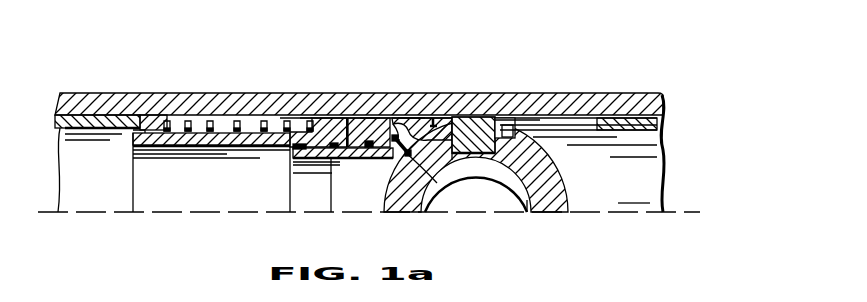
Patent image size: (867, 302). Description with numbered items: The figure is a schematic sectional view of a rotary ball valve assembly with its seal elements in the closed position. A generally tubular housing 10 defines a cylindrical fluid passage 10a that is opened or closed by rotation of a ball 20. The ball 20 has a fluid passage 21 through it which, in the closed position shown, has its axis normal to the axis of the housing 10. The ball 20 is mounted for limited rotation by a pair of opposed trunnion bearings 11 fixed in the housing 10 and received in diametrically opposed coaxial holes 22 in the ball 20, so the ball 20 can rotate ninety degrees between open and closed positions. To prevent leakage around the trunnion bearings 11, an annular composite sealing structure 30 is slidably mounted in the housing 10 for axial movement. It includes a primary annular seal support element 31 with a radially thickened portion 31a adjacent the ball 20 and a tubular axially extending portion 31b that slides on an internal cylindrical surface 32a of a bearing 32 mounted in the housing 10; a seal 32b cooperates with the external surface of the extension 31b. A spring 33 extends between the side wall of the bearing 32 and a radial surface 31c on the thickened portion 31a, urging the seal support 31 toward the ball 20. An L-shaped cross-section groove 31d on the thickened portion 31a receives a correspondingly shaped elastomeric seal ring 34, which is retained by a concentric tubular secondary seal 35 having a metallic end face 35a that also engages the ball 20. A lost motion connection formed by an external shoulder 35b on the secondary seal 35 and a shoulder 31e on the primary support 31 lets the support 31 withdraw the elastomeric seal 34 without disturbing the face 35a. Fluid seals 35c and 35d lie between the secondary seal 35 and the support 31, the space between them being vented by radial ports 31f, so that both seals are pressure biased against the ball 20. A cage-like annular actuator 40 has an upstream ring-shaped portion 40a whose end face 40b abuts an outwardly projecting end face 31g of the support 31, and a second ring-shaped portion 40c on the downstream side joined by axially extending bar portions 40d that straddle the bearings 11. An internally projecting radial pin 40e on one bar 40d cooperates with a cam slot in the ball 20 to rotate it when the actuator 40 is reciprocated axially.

The tubular housing 10 is at (113, 93).
The fluid passage 10a is at (635, 193).
The trunnion bearings 11 is at (494, 162).
The ball 20 is at (572, 203).
The ball fluid passage 21 is at (523, 200).
The coaxial holes 22 is at (463, 156).
The composite sealing structure 30 is at (328, 170).
The primary annular seal support element 31 is at (323, 125).
The radially thickened portion 31a is at (365, 128).
The tubular axially extending portion 31b is at (227, 147).
The radial surface 31c is at (302, 130).
The L-shaped cross-section groove 31d is at (446, 121).
The shoulder 31e is at (352, 160).
The radial ports 31f is at (345, 120).
The outwardly projecting end face 31g is at (412, 120).
The bearing 32 is at (105, 129).
The internal cylindrical surface 32a is at (148, 135).
The seal 32b is at (168, 127).
The spring 33 is at (232, 120).
The elastomeric seal ring 34 is at (397, 152).
The secondary seal 35 is at (295, 168).
The metallic end face 35a is at (430, 183).
The external shoulder 35b is at (338, 160).
The fluid seal 35c is at (293, 150).
The fluid seal 35d is at (396, 138).
The annular actuator 40 is at (560, 110).
The ring-shaped portion 40a is at (450, 120).
The end face 40b is at (400, 120).
The second ring-shaped portion 40c is at (667, 145).
The bar portions 40d is at (553, 128).
The radial pin 40e is at (513, 107).